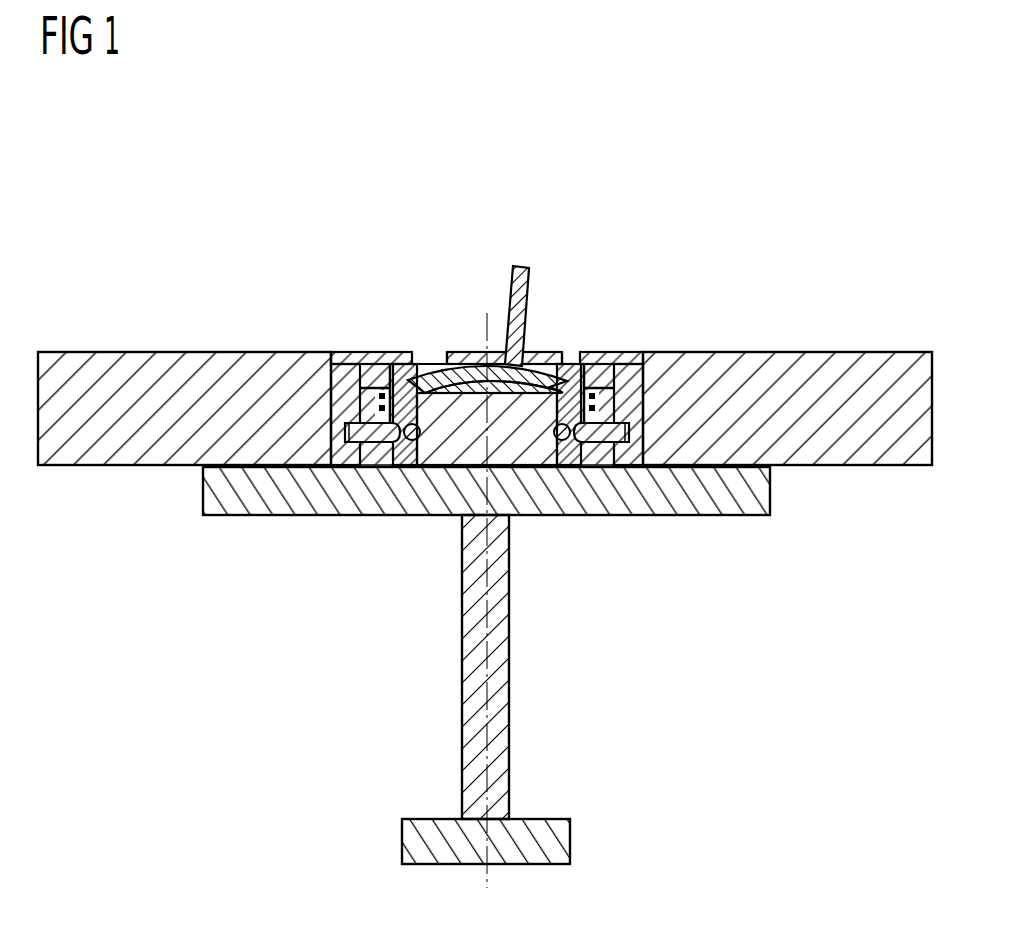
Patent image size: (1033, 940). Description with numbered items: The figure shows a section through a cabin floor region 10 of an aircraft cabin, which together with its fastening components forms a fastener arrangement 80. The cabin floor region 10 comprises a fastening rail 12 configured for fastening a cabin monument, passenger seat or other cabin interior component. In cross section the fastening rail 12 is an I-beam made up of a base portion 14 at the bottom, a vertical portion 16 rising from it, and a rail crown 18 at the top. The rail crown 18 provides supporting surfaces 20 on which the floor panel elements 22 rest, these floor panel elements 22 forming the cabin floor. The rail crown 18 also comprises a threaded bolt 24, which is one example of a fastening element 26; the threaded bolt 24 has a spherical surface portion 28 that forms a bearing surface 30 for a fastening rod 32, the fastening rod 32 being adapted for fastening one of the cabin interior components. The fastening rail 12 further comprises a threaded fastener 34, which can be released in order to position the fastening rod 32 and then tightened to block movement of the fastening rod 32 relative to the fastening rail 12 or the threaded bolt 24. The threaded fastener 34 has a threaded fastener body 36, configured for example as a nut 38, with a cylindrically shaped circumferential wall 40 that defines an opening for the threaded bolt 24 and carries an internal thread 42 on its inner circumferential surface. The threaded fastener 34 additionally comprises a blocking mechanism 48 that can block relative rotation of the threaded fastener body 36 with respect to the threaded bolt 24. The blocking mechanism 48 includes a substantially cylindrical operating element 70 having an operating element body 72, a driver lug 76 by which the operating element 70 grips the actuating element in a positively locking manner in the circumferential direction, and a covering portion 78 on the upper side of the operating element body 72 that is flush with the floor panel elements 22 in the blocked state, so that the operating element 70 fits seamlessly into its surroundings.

The fastener arrangement 80 is at (244, 136).
The cabin floor region 10 is at (215, 220).
The fastening rail 12 is at (398, 589).
The base portion 14 is at (448, 857).
The vertical portion 16 is at (503, 634).
The rail crown 18 is at (719, 500).
The supporting surfaces 20 is at (200, 468).
The floor panel elements 22 is at (80, 360).
The threaded bolt 24 is at (455, 455).
The fastening element 26 is at (521, 455).
The spherical surface portion 28 is at (440, 385).
The bearing surface 30 is at (440, 385).
The fastening rod 32 is at (521, 265).
The threaded fastener 34 is at (614, 317).
The threaded fastener body 36 is at (568, 370).
The nut 38 is at (568, 370).
The circumferential wall 40 is at (575, 452).
The internal thread 42 is at (563, 409).
The blocking mechanism 48 is at (375, 326).
The operating element 70 is at (636, 387).
The operating element body 72 is at (634, 455).
The driver lug 76 is at (372, 385).
The covering portion 78 is at (625, 360).